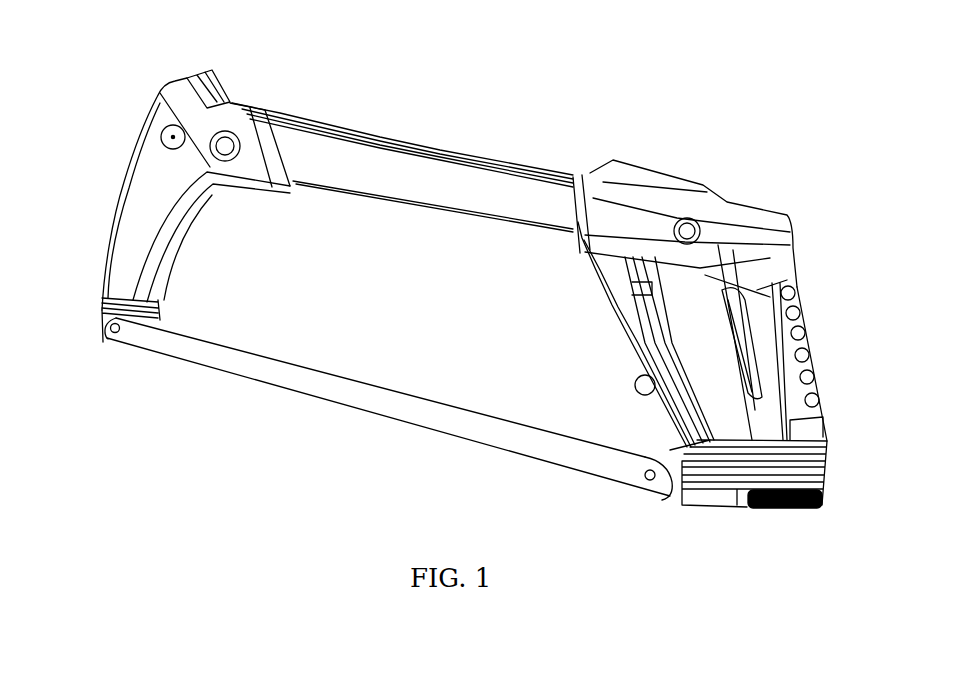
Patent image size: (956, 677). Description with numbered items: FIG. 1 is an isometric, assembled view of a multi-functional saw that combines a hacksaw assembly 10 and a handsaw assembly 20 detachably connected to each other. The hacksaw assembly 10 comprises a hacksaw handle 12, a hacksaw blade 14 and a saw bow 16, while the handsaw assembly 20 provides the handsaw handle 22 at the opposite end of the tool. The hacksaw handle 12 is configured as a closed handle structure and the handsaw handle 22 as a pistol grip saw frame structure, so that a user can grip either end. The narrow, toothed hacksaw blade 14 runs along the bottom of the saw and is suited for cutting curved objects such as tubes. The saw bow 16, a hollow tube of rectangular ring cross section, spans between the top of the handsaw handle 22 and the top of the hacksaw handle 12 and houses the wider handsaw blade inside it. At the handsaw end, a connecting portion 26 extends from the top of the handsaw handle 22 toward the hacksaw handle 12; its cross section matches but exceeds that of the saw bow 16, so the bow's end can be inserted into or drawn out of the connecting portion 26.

The hacksaw assembly 10 is at (779, 193).
The hacksaw handle 12 is at (780, 337).
The hacksaw blade 14 is at (503, 444).
The saw bow 16 is at (488, 190).
The handsaw assembly 20 is at (124, 125).
The handsaw handle 22 is at (125, 237).
The connecting portion 26 is at (227, 100).